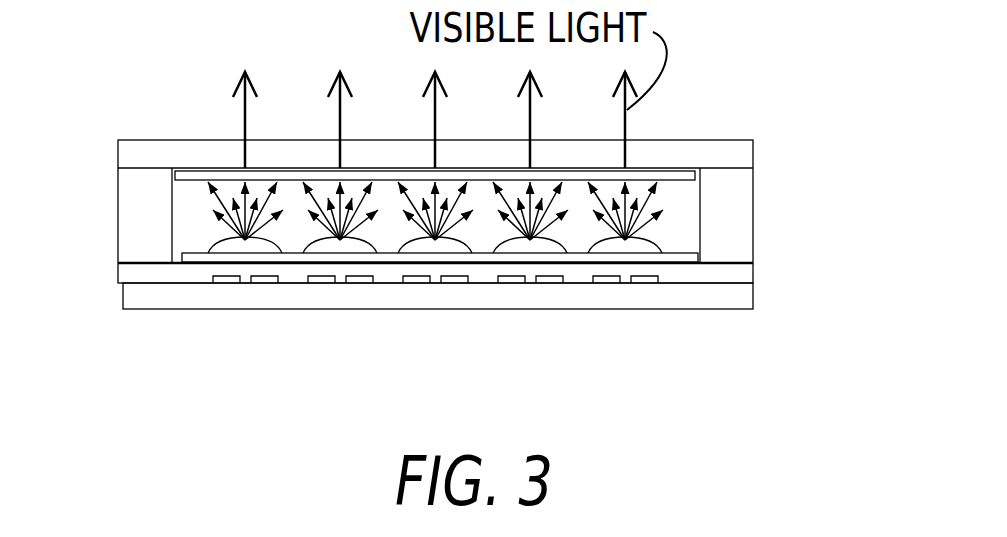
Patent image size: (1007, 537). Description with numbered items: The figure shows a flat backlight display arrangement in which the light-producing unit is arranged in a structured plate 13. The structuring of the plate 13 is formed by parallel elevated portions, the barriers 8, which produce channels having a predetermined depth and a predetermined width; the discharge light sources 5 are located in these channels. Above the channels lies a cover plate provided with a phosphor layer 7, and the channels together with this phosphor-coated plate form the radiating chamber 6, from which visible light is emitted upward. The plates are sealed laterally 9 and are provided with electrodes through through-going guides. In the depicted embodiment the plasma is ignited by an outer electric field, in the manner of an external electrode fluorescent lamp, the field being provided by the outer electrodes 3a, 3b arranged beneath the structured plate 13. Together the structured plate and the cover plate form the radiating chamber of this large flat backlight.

The outer electrode 3a is at (320, 285).
The outer electrode 3b is at (273, 288).
The discharge light source 5 is at (637, 243).
The radiating chamber 6 is at (523, 237).
The phosphor layer 7 is at (673, 172).
The barrier 8 is at (577, 208).
The lateral seal 9 is at (723, 212).
The structured plate 13 is at (177, 292).